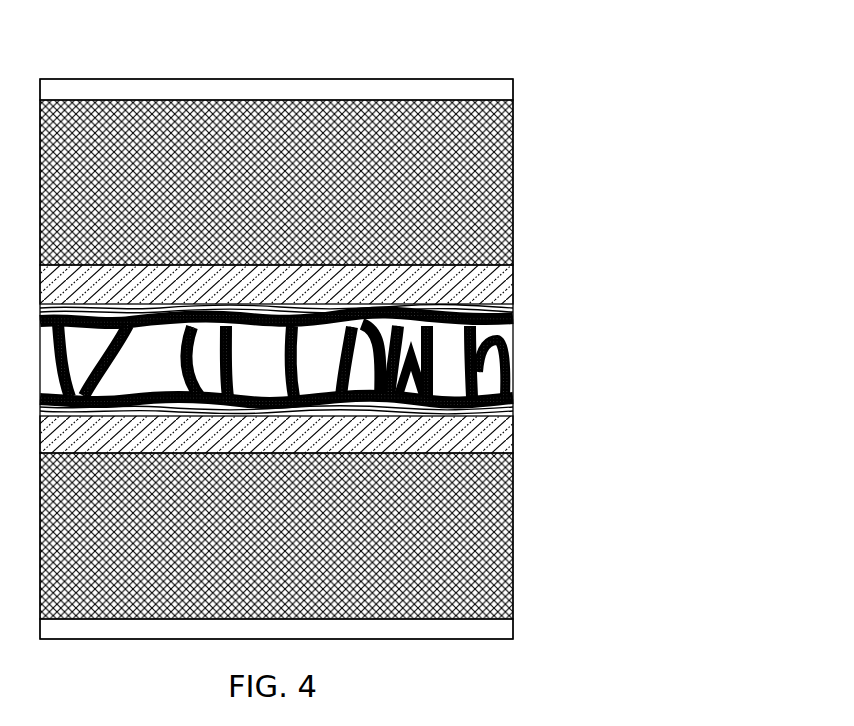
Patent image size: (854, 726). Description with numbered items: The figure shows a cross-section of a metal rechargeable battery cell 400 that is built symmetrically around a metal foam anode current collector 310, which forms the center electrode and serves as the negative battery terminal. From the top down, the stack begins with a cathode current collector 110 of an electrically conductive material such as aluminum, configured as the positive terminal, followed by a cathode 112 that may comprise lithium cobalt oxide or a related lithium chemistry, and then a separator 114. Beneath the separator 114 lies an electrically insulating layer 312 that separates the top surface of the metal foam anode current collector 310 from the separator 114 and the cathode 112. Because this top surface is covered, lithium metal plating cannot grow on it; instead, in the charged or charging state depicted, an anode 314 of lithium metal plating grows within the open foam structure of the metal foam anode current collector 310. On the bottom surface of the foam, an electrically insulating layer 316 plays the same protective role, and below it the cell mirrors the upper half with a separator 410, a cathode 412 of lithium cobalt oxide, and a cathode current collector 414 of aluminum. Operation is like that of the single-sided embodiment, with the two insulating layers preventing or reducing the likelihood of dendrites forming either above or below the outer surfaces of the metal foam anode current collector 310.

The metal rechargeable battery cell 400 is at (156, 43).
The cathode current collector 110 is at (513, 80).
The cathode 112 is at (513, 134).
The separator 114 is at (514, 303).
The electrically insulating layer 312 is at (514, 309).
The metal foam anode current collector 310 is at (513, 316).
The anode 314 is at (513, 384).
The electrically insulating layer 316 is at (513, 408).
The separator 410 is at (513, 437).
The cathode 412 is at (513, 580).
The cathode current collector 414 is at (513, 628).